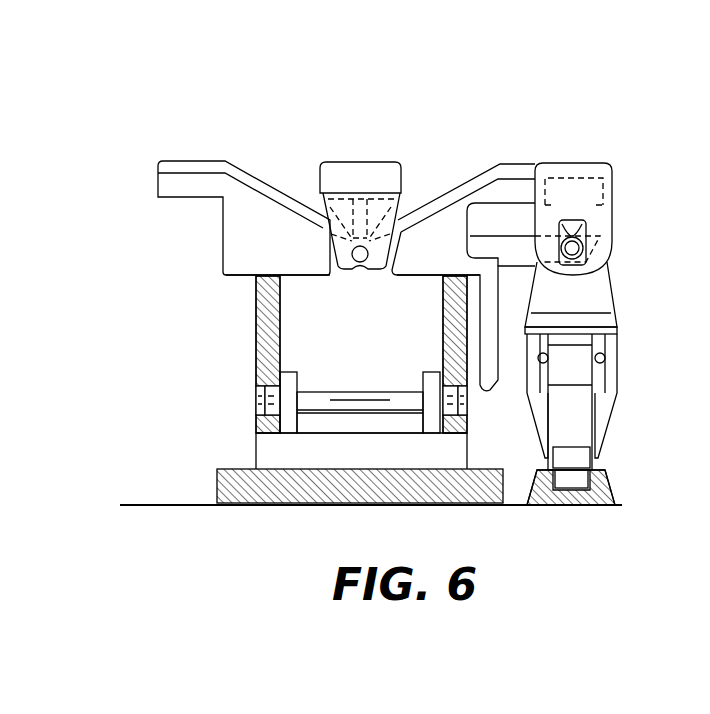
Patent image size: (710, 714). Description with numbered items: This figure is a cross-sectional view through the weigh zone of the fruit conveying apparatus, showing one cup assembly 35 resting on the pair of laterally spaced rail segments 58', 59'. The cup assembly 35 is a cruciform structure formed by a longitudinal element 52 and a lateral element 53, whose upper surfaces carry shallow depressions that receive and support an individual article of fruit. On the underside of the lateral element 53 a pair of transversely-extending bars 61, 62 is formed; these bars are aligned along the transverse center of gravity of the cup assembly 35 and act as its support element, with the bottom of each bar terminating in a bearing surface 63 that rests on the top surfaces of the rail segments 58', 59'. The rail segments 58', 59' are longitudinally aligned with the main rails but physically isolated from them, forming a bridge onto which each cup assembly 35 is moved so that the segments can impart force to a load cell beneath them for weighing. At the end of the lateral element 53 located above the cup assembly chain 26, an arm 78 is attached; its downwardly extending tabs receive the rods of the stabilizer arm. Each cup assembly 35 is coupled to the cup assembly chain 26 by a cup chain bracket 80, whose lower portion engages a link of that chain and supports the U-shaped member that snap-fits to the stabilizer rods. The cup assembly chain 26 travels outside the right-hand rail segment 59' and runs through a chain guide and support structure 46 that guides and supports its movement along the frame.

The cup assembly 35 is at (320, 122).
The longitudinal element 52 is at (366, 175).
The lateral element 53 is at (453, 176).
The transversely-extending bar 61 is at (243, 246).
The transversely-extending bar 62 is at (444, 260).
The bearing surface 63 is at (237, 280).
The arm 78 is at (570, 163).
The cup chain bracket 80 is at (612, 292).
The cup assembly chain 26 is at (590, 463).
The chain guide and support structure 46 is at (610, 484).
The rail segment 58' is at (297, 354).
The rail segment 59' is at (425, 354).